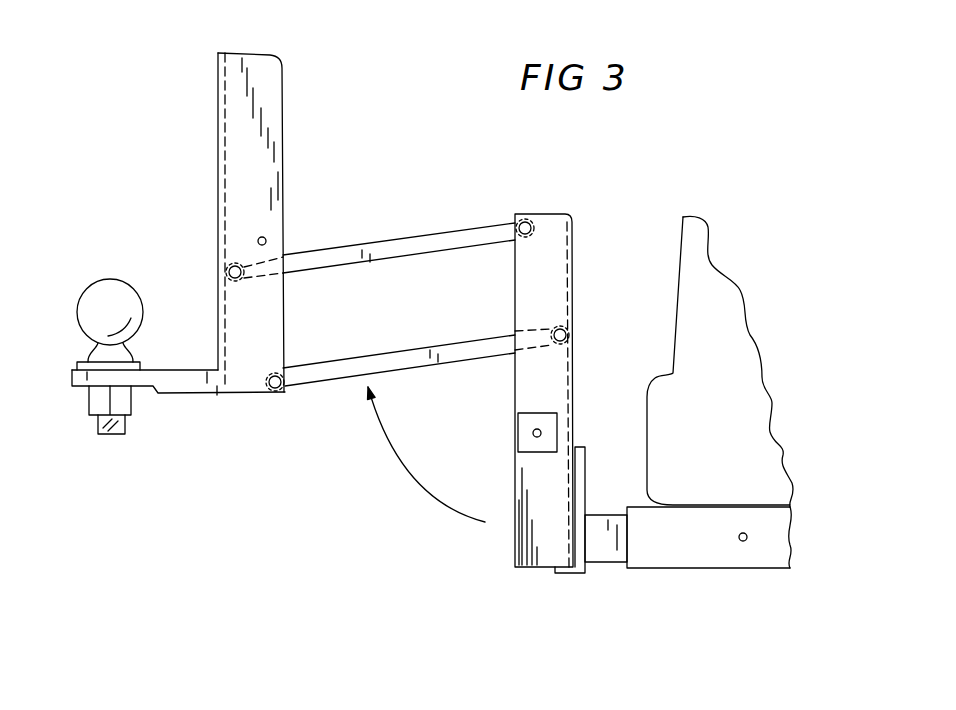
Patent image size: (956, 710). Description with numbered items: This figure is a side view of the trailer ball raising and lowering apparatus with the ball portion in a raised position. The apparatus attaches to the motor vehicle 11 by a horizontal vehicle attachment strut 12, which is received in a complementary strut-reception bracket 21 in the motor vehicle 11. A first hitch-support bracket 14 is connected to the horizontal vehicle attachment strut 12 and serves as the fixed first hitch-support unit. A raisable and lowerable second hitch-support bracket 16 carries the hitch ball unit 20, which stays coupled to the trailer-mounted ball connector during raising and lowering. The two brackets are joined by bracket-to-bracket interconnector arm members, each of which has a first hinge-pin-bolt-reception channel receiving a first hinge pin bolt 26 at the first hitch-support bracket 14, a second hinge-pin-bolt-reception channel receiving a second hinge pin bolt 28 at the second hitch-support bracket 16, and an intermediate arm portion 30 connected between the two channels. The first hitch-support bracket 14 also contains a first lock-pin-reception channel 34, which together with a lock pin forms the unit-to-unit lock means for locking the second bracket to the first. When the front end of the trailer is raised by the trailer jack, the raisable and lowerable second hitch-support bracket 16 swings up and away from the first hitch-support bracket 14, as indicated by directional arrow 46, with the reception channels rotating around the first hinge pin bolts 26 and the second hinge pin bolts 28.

The motor vehicle 11 is at (713, 303).
The horizontal vehicle attachment strut 12 is at (600, 563).
The first hitch-support bracket 14 is at (548, 268).
The raisable and lowerable second hitch-support bracket 16 is at (232, 148).
The hitch ball unit 20 is at (92, 288).
The strut-reception bracket 21 is at (655, 548).
The first hinge pin bolt 26 is at (530, 228).
The second hinge pin bolt 28 is at (230, 271).
The intermediate arm portion 30 is at (412, 243).
The first lock-pin-reception channel 34 is at (537, 433).
The directional arrow 46 is at (413, 478).